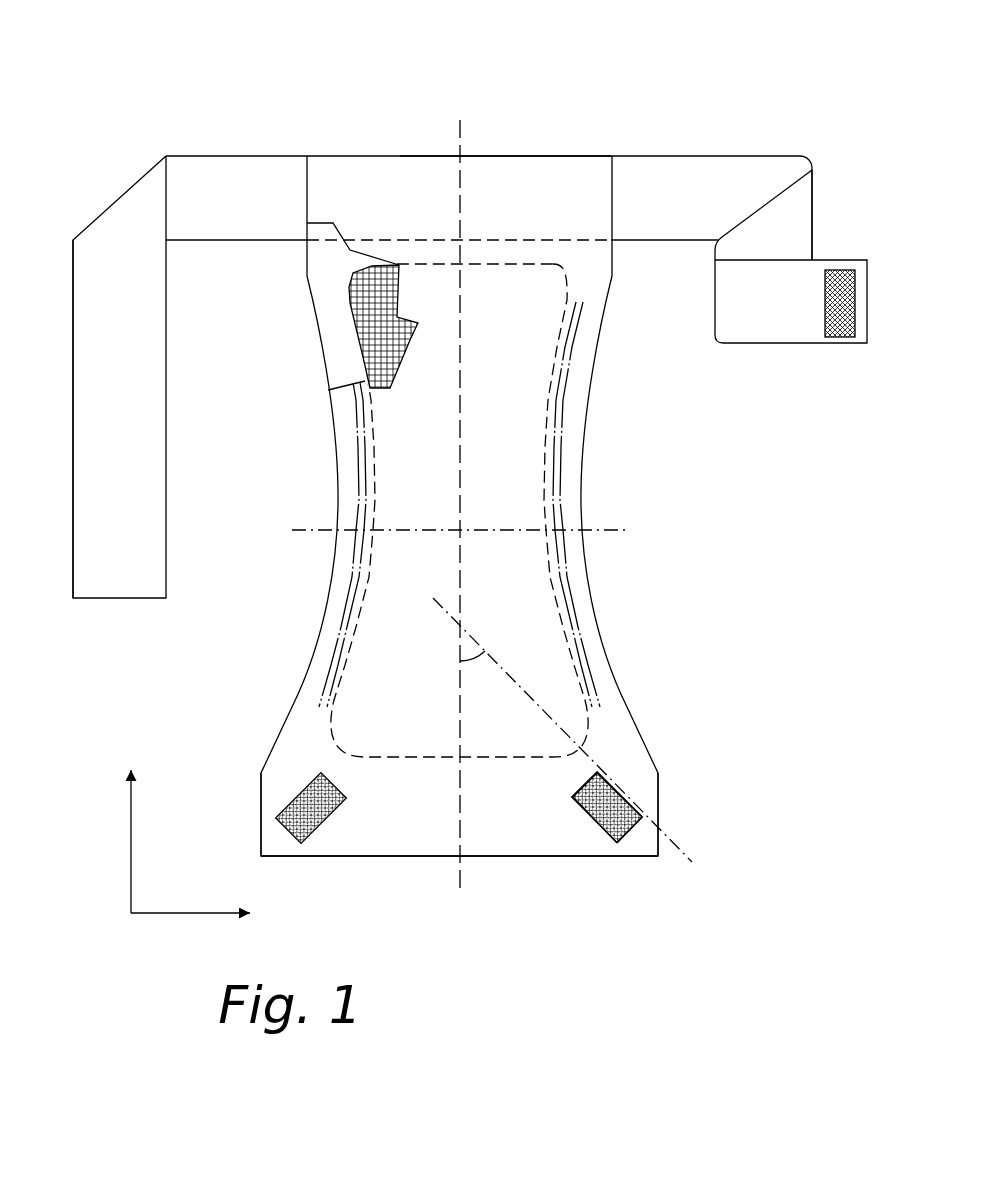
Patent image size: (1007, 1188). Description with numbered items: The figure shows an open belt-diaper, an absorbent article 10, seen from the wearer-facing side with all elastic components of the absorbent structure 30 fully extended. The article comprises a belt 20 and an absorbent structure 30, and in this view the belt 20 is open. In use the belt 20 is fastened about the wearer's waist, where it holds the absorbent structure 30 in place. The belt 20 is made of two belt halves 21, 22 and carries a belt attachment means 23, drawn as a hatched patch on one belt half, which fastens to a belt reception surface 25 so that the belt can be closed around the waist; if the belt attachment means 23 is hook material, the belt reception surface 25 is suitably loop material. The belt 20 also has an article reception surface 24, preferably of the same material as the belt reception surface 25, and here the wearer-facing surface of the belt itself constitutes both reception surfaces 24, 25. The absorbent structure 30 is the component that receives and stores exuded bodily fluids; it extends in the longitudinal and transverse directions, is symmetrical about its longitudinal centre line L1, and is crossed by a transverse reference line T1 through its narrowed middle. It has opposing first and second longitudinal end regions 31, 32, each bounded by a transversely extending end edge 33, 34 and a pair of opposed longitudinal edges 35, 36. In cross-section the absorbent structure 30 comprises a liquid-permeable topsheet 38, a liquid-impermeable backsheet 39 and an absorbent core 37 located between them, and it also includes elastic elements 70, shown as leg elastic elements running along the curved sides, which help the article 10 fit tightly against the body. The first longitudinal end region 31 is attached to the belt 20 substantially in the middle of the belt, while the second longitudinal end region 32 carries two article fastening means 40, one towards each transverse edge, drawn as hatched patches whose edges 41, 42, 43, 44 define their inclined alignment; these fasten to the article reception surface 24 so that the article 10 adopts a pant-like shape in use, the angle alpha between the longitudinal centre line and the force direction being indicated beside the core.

The absorbent article 10 is at (173, 50).
The belt 20 is at (718, 143).
The belt half 21 is at (65, 303).
The belt half 22 is at (820, 182).
The belt attachment means 23 is at (831, 315).
The article reception surface 24 is at (137, 392).
The belt reception surface 25 is at (793, 228).
The absorbent structure 30 is at (592, 459).
The first longitudinal end region 31 is at (493, 177).
The second longitudinal end region 32 is at (428, 838).
The end edge 33 is at (568, 156).
The end edge 34 is at (500, 858).
The longitudinal edge 35 is at (658, 800).
The longitudinal edge 36 is at (261, 840).
The absorbent core 37 is at (373, 323).
The topsheet 38 is at (487, 368).
The backsheet 39 is at (330, 286).
The article fastening means 40 is at (300, 816).
The patch edge 41 is at (633, 793).
The patch edge 42 is at (587, 810).
The patch edge 43 is at (587, 780).
The patch edge 44 is at (633, 827).
The elastic elements 70 is at (328, 673).
The longitudinal centre line L1 is at (458, 453).
The transverse axis T1 is at (608, 532).